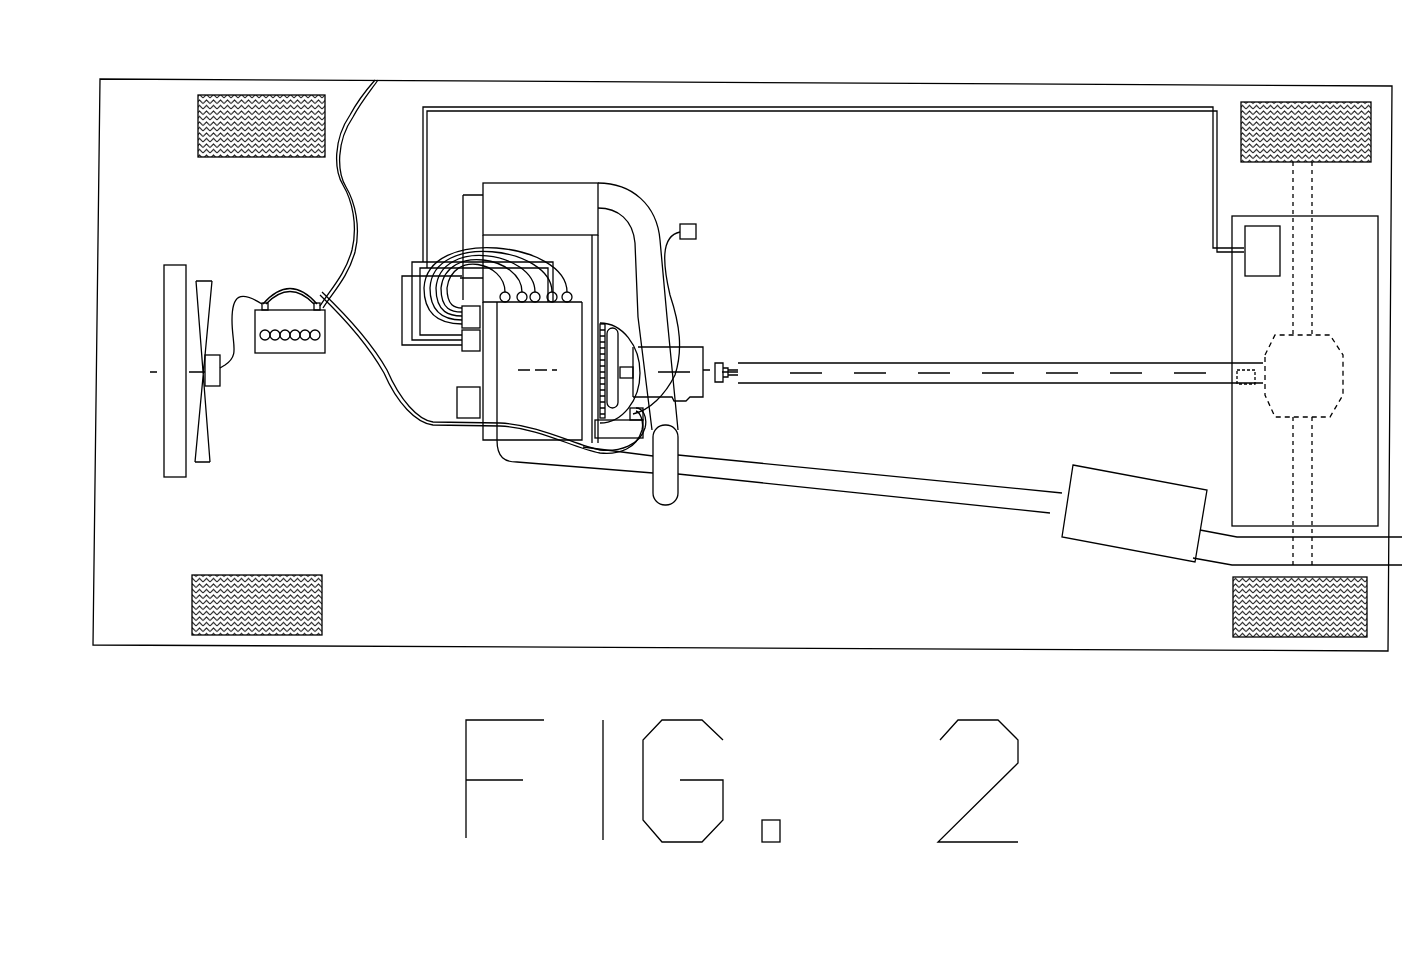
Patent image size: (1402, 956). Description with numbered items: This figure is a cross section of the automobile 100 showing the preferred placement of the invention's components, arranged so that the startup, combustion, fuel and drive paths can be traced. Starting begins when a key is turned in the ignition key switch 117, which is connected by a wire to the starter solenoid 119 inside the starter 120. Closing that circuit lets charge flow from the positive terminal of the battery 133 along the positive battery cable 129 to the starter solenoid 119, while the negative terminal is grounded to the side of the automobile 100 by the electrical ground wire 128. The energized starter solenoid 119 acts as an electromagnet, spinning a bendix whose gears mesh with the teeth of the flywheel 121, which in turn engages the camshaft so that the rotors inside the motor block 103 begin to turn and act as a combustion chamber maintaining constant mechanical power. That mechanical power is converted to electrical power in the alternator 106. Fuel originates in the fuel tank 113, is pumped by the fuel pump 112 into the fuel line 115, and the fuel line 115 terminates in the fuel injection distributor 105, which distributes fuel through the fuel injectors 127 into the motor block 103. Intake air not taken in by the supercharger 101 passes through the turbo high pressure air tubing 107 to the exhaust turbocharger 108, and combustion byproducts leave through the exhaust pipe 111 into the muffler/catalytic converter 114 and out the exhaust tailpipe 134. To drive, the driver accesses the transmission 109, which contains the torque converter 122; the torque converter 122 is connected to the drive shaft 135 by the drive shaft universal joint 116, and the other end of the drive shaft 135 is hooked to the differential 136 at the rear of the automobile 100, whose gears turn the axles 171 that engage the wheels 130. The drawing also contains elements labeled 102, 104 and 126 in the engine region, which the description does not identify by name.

The automobile 100 is at (1375, 85).
The supercharger 101 is at (529, 241).
The engine 102 is at (540, 339).
The motor block 103 is at (532, 371).
The ignition coil 104 is at (472, 324).
The fuel injection distributor 105 is at (471, 348).
The alternator 106 is at (470, 408).
The turbo high pressure air tubing 107 is at (598, 208).
The exhaust turbocharger 108 is at (679, 495).
The transmission 109 is at (668, 374).
The exhaust pipe 111 is at (779, 476).
The fuel pump 112 is at (1262, 251).
The fuel tank 113 is at (1305, 371).
The muffler/catalytic converter 114 is at (1134, 513).
The fuel line 115 is at (833, 187).
The drive shaft universal joint 116 is at (721, 364).
The ignition key switch 117 is at (681, 310).
The starter solenoid 119 is at (632, 426).
The starter 120 is at (606, 438).
The flywheel 121 is at (604, 316).
The torque converter 122 is at (617, 340).
The spark plug wires 126 is at (522, 303).
The fuel injectors 127 is at (553, 303).
The electrical ground wire 128 is at (346, 194).
The positive battery cable 129 is at (255, 372).
The wheels 130 is at (1294, 93).
The battery 133 is at (226, 371).
The exhaust tailpipe 134 is at (1297, 547).
The drive shaft 135 is at (1000, 373).
The differential 136 is at (1290, 376).
The axles 171 is at (1305, 203).